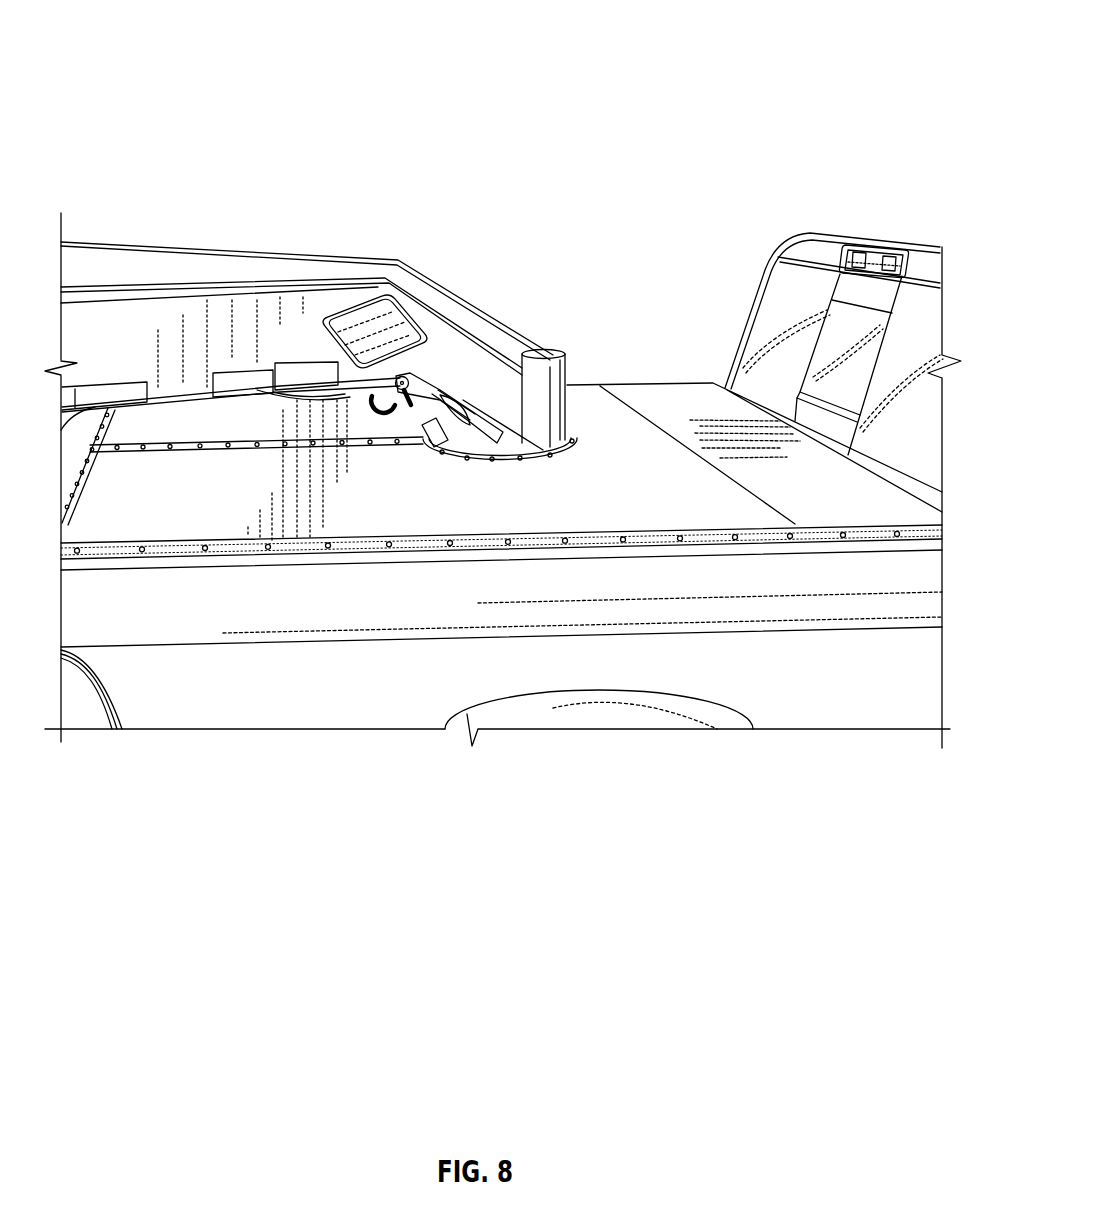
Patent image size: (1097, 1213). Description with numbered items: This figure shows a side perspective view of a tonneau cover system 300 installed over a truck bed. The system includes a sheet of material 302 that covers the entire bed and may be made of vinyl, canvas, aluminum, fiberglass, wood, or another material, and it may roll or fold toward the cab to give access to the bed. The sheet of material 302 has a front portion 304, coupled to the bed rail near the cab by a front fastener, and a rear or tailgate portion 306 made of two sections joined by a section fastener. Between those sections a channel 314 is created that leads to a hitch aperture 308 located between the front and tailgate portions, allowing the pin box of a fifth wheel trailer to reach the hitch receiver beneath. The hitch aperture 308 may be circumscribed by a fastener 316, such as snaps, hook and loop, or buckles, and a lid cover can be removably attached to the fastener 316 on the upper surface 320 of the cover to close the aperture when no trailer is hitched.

The tonneau cover system 300 is at (261, 36).
The sheet of material 302 is at (692, 500).
The front portion 304 is at (668, 405).
The tailgate portion 306 is at (123, 427).
The hitch aperture 308 is at (465, 450).
The channel 314 is at (320, 450).
The fastener 316 is at (492, 453).
The upper surface 320 is at (593, 405).